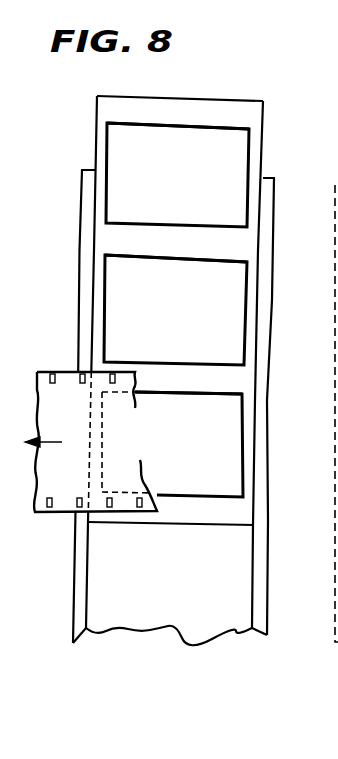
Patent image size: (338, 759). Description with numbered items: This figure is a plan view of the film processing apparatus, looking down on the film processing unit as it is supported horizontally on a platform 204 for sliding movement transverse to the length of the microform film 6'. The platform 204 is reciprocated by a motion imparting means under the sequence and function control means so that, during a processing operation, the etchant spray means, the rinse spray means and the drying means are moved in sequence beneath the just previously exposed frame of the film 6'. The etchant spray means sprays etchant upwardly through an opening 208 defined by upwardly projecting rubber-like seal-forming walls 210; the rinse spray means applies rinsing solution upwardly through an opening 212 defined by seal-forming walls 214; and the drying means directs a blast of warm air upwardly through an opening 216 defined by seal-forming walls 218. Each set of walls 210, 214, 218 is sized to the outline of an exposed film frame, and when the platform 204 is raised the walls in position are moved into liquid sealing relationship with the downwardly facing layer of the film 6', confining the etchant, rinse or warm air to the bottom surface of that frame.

The platform 204 is at (82, 598).
The microform film 6' is at (91, 412).
The opening 208 is at (244, 460).
The seal-forming walls 210 is at (242, 402).
The opening 212 is at (242, 285).
The seal-forming walls 214 is at (234, 264).
The opening 216 is at (243, 157).
The seal-forming walls 218 is at (233, 133).